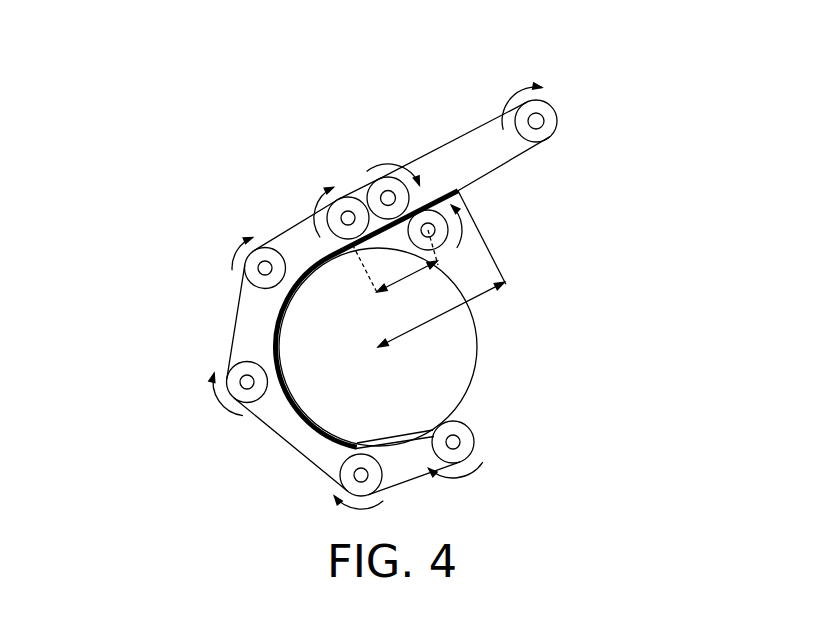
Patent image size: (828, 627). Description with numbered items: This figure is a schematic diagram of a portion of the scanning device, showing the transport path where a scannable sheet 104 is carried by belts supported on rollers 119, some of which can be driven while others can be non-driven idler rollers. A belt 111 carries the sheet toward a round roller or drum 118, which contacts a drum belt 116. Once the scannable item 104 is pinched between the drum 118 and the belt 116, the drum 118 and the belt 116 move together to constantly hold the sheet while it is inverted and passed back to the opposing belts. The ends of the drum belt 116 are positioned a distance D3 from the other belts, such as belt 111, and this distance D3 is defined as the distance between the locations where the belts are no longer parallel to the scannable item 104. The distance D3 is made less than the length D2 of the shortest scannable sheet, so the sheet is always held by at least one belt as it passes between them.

The scannable sheet 104 is at (437, 197).
The belt 111 is at (468, 132).
The drum belt 116 is at (292, 226).
The drum 118 is at (393, 395).
The rollers 119 is at (387, 198).
The length of the shortest scannable sheet D2 is at (436, 318).
The distance D3 is at (414, 276).